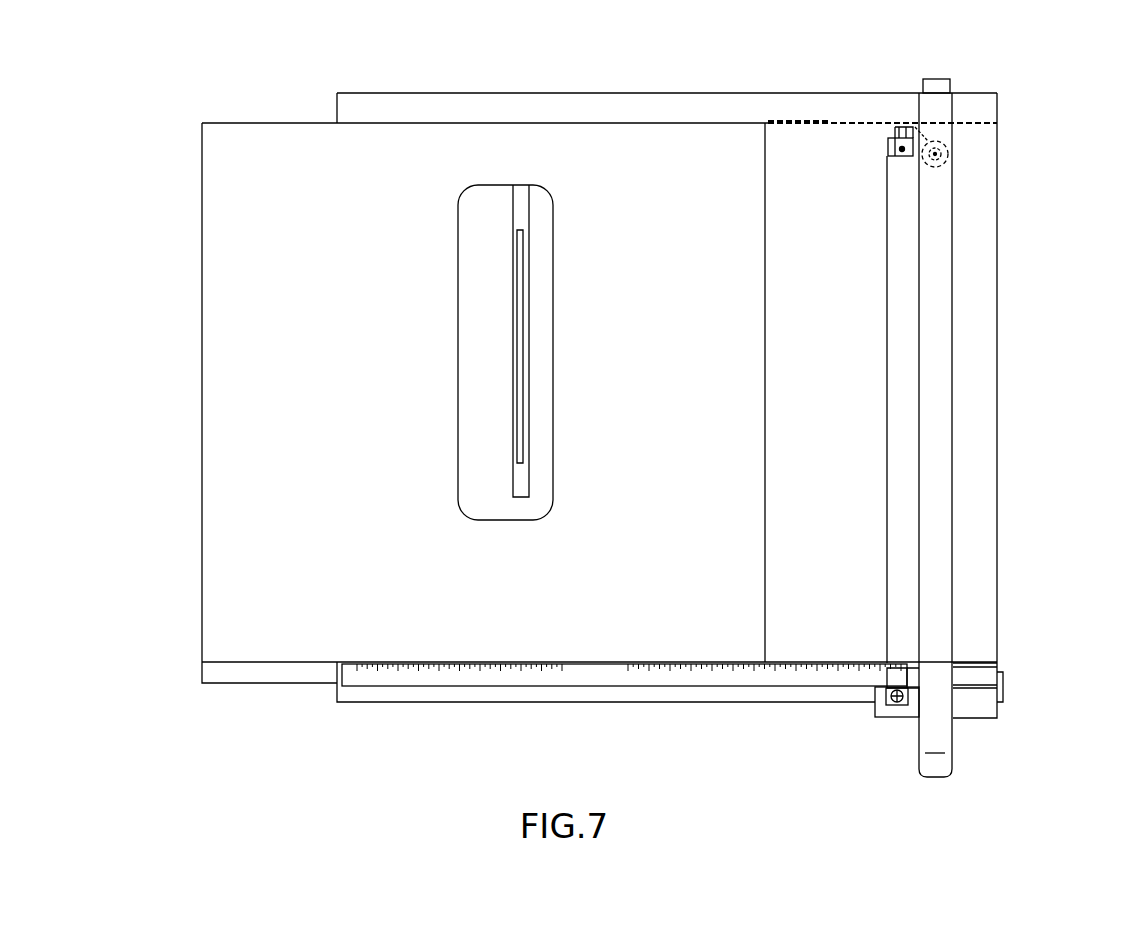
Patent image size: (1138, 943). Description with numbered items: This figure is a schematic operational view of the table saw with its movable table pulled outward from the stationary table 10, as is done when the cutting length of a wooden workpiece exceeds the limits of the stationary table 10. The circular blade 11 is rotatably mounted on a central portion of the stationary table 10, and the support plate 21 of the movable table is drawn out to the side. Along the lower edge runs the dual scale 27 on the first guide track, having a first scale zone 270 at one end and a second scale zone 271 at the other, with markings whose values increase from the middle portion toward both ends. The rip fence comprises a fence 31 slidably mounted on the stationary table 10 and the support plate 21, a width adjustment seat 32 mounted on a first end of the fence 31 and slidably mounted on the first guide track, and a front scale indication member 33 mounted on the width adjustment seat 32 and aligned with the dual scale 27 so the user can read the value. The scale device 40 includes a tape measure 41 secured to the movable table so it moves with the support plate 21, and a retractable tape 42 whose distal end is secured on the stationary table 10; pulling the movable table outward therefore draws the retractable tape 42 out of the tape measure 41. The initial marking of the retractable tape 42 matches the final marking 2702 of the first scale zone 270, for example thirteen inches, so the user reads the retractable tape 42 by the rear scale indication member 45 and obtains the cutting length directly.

The stationary table 10 is at (632, 160).
The circular blade 11 is at (520, 243).
The support plate 21 is at (975, 330).
The dual scale 27 is at (624, 682).
The first scale zone 270 is at (714, 660).
The second scale zone 271 is at (556, 660).
The final marking 2702 is at (907, 677).
The fence 31 is at (932, 476).
The width adjustment seat 32 is at (892, 710).
The front scale indication member 33 is at (893, 666).
The scale device 40 is at (833, 121).
The tape measure 41 is at (950, 154).
The retractable tape 42 is at (771, 121).
The rear scale indication member 45 is at (898, 127).